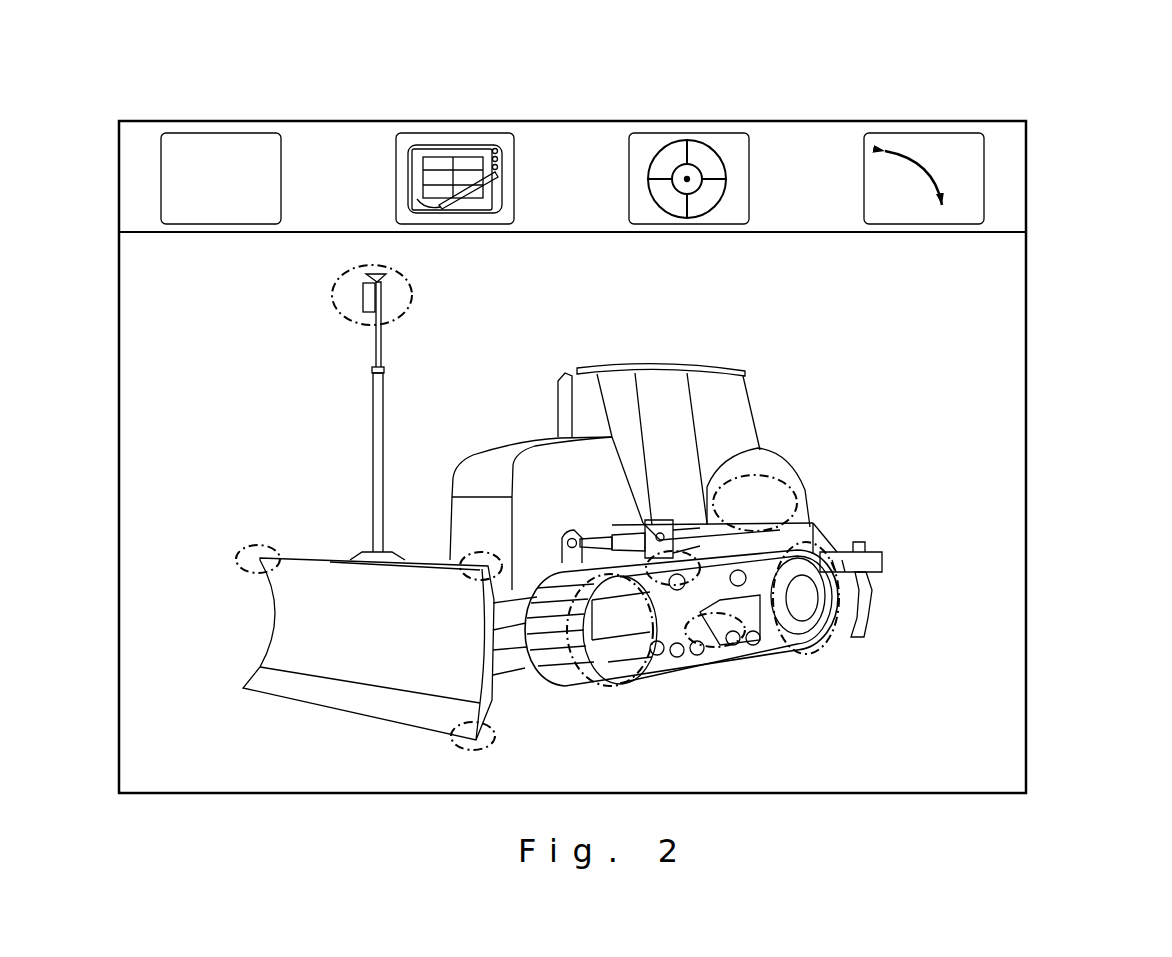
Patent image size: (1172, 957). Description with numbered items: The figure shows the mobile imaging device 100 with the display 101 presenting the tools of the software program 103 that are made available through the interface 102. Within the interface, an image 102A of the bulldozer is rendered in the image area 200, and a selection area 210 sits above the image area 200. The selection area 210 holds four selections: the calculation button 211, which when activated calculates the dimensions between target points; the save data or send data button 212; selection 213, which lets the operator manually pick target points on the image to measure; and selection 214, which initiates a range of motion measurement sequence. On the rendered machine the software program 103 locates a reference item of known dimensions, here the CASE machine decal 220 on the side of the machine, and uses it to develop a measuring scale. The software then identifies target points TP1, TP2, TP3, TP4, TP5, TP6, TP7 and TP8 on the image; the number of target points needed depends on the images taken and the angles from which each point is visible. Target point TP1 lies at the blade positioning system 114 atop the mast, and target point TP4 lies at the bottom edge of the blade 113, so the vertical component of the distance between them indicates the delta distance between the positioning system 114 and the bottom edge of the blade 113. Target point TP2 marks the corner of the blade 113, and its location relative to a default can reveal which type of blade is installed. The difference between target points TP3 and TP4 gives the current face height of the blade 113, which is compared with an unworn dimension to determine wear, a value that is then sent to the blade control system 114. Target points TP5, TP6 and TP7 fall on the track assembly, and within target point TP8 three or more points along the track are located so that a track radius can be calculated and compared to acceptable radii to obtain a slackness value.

The mobile imaging device 100 is at (1064, 480).
The display 101 is at (1027, 550).
The interface 102 is at (669, 546).
The image of machine 102A is at (795, 418).
The software program 103 is at (1050, 123).
The blade 113 is at (272, 648).
The positioning system 114 is at (363, 298).
The image area 200 is at (987, 390).
The selection area 210 is at (1002, 189).
The calculation button 211 is at (233, 133).
The save data or send data button 212 is at (472, 133).
The manual target point selection 213 is at (706, 133).
The range of motion measurement selection 214 is at (905, 133).
The machine decal 220 is at (785, 480).
The target point TP1 is at (412, 285).
The target point TP2 is at (254, 545).
The target point TP3 is at (467, 557).
The target point TP4 is at (485, 748).
The target point TP5 is at (610, 690).
The target point TP6 is at (820, 658).
The target point TP7 is at (712, 650).
The target point TP8 is at (678, 552).